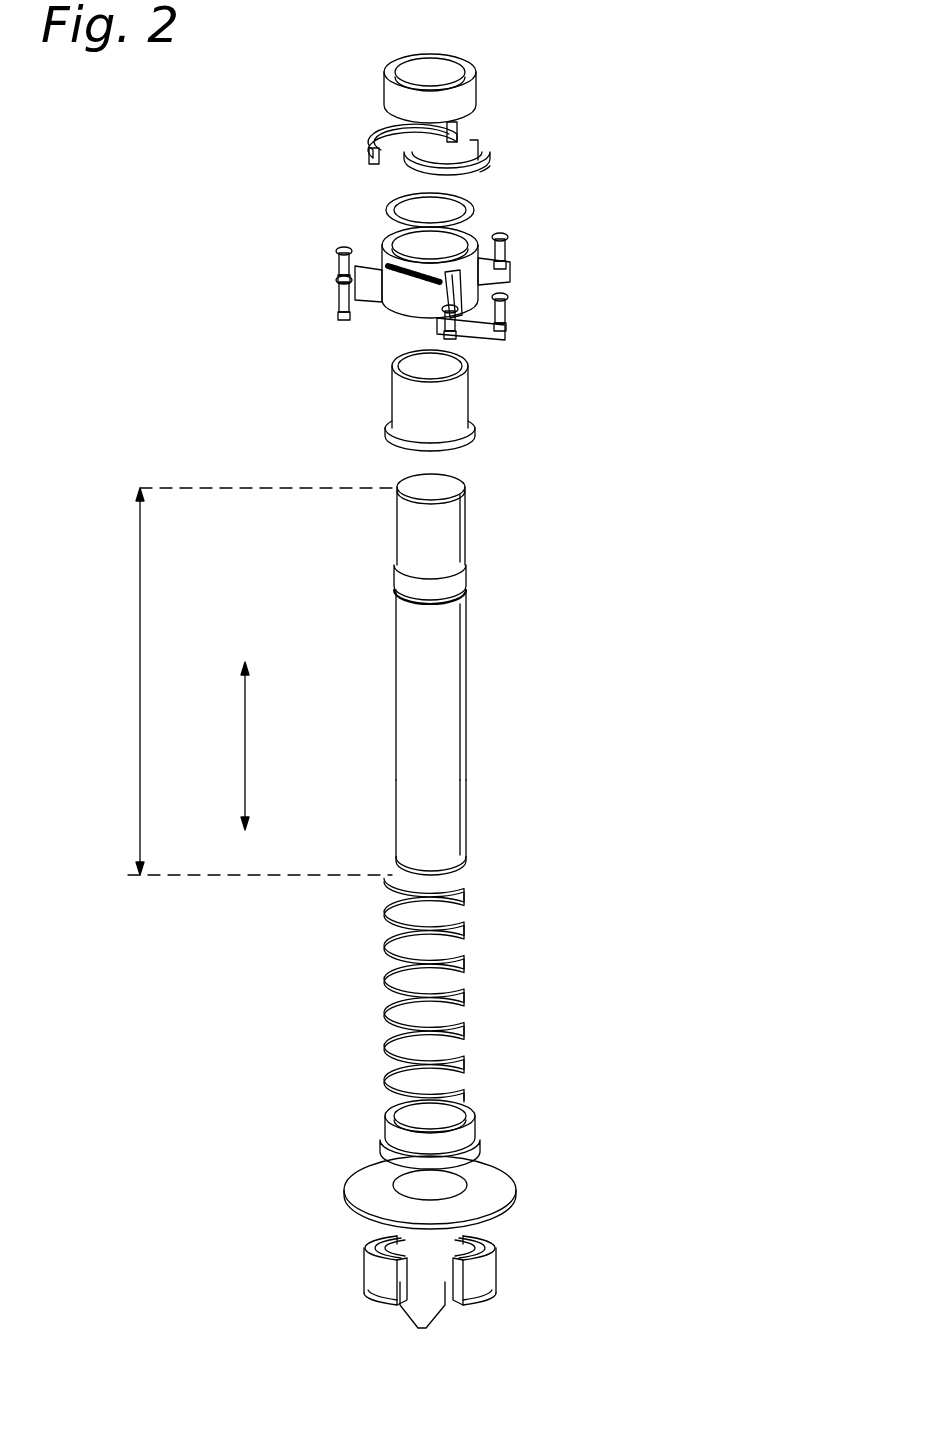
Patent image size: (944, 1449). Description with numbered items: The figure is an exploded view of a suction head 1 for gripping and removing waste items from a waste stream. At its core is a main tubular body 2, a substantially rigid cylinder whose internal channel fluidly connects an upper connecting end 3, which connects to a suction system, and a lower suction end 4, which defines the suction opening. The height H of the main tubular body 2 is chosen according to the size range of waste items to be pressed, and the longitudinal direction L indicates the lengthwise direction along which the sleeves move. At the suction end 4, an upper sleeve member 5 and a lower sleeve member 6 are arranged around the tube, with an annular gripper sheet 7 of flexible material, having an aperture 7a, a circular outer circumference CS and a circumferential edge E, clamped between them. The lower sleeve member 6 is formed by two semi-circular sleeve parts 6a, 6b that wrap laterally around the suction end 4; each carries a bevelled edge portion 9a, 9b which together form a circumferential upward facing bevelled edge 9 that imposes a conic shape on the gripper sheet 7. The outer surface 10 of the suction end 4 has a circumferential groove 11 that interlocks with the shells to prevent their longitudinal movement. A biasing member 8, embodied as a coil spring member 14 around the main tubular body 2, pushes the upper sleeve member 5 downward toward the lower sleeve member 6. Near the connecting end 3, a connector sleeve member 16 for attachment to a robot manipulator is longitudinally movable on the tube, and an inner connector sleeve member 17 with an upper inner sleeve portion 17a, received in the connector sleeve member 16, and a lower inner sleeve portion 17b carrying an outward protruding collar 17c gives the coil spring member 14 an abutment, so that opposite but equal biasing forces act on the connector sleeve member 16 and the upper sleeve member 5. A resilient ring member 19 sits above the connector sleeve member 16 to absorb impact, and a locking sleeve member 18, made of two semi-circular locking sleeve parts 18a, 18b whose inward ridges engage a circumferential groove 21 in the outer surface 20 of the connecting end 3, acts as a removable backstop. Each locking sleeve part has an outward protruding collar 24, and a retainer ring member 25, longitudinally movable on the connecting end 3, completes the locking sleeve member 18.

The suction head 1 is at (677, 493).
The main tubular body 2 is at (475, 704).
The connecting end 3 is at (465, 532).
The suction end 4 is at (466, 835).
The upper sleeve member 5 is at (474, 1132).
The lower sleeve member 6 is at (445, 1292).
The semi-circular sleeve part 6a is at (365, 1253).
The semi-circular sleeve part 6b is at (495, 1257).
The annular gripper sheet 7 is at (517, 1186).
The aperture 7a is at (420, 1195).
The biasing member 8 is at (490, 958).
The circumferential upward facing bevelled edge 9 is at (363, 1295).
The bevelled edge portion 9a is at (373, 1297).
The bevelled edge portion 9b is at (492, 1293).
The outer surface 10 is at (396, 848).
The circumferential groove 11 is at (390, 870).
The coil spring member 14 is at (387, 982).
The connector sleeve member 16 is at (475, 290).
The inner connector sleeve member 17 is at (470, 368).
The upper inner sleeve portion 17a is at (392, 387).
The lower inner sleeve portion 17b is at (388, 423).
The circumferential outward protruding collar 17c is at (475, 422).
The locking sleeve member 18 is at (533, 172).
The semi-circular locking sleeve part 18a is at (377, 143).
The semi-circular locking sleeve part 18b is at (483, 157).
The resilient ring member 19 is at (397, 213).
The outer surface 20 is at (398, 632).
The circumferential groove 21 is at (396, 580).
The circumferential outward protruding collar 24 is at (378, 163).
The retainer ring member 25 is at (392, 78).
The height H is at (140, 678).
The longitudinal direction L is at (245, 745).
The circumferential edge E is at (345, 1192).
The outer circumference CS is at (502, 1215).